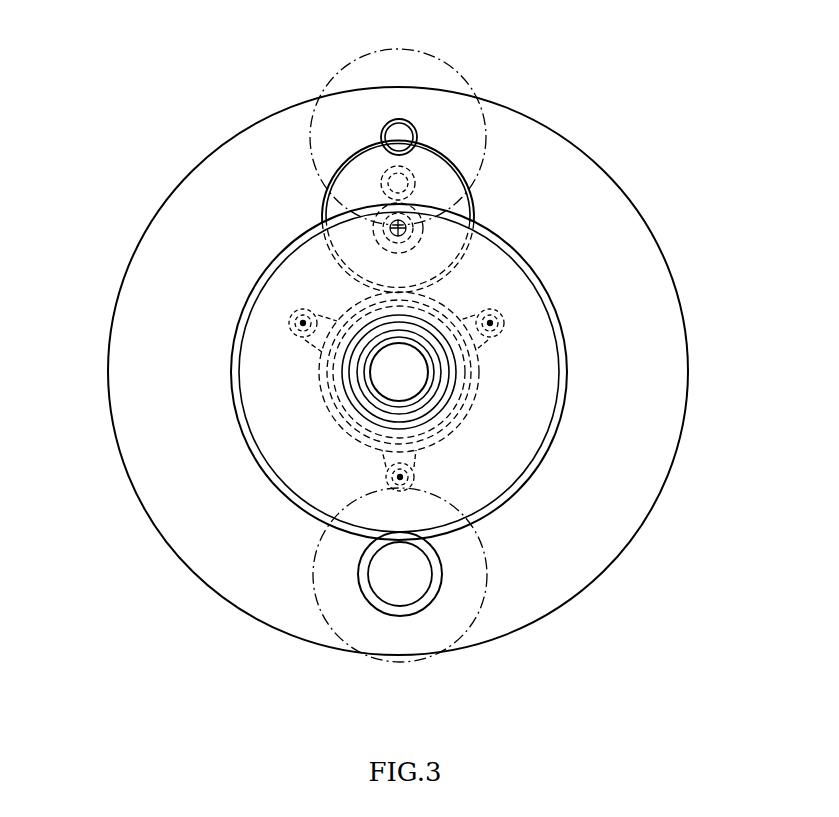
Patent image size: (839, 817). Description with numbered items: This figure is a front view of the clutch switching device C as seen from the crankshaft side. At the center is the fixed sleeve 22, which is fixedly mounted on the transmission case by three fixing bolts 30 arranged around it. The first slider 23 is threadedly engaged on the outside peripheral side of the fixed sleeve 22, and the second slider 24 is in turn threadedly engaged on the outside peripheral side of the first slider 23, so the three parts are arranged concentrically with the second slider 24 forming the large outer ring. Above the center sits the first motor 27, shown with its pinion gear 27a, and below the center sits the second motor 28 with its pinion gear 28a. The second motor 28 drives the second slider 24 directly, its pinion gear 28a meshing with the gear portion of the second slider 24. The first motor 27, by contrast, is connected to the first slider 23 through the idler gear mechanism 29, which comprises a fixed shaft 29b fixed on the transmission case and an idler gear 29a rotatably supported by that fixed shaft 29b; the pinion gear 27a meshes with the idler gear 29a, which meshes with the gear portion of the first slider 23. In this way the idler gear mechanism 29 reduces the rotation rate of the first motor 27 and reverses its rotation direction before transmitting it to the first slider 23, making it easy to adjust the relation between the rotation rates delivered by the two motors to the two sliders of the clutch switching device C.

The clutch switching device C is at (202, 123).
The fixed sleeve 22 is at (482, 358).
The first slider 23 is at (483, 413).
The second slider 24 is at (567, 350).
The first motor 27 is at (410, 52).
The pinion gear 27a is at (415, 128).
The second motor 28 is at (312, 597).
The pinion gear 28a is at (427, 597).
The idler gear mechanism 29 is at (700, 130).
The idler gear 29a is at (473, 202).
The fixed shaft 29b is at (420, 237).
The fixing bolts 30 is at (505, 318).